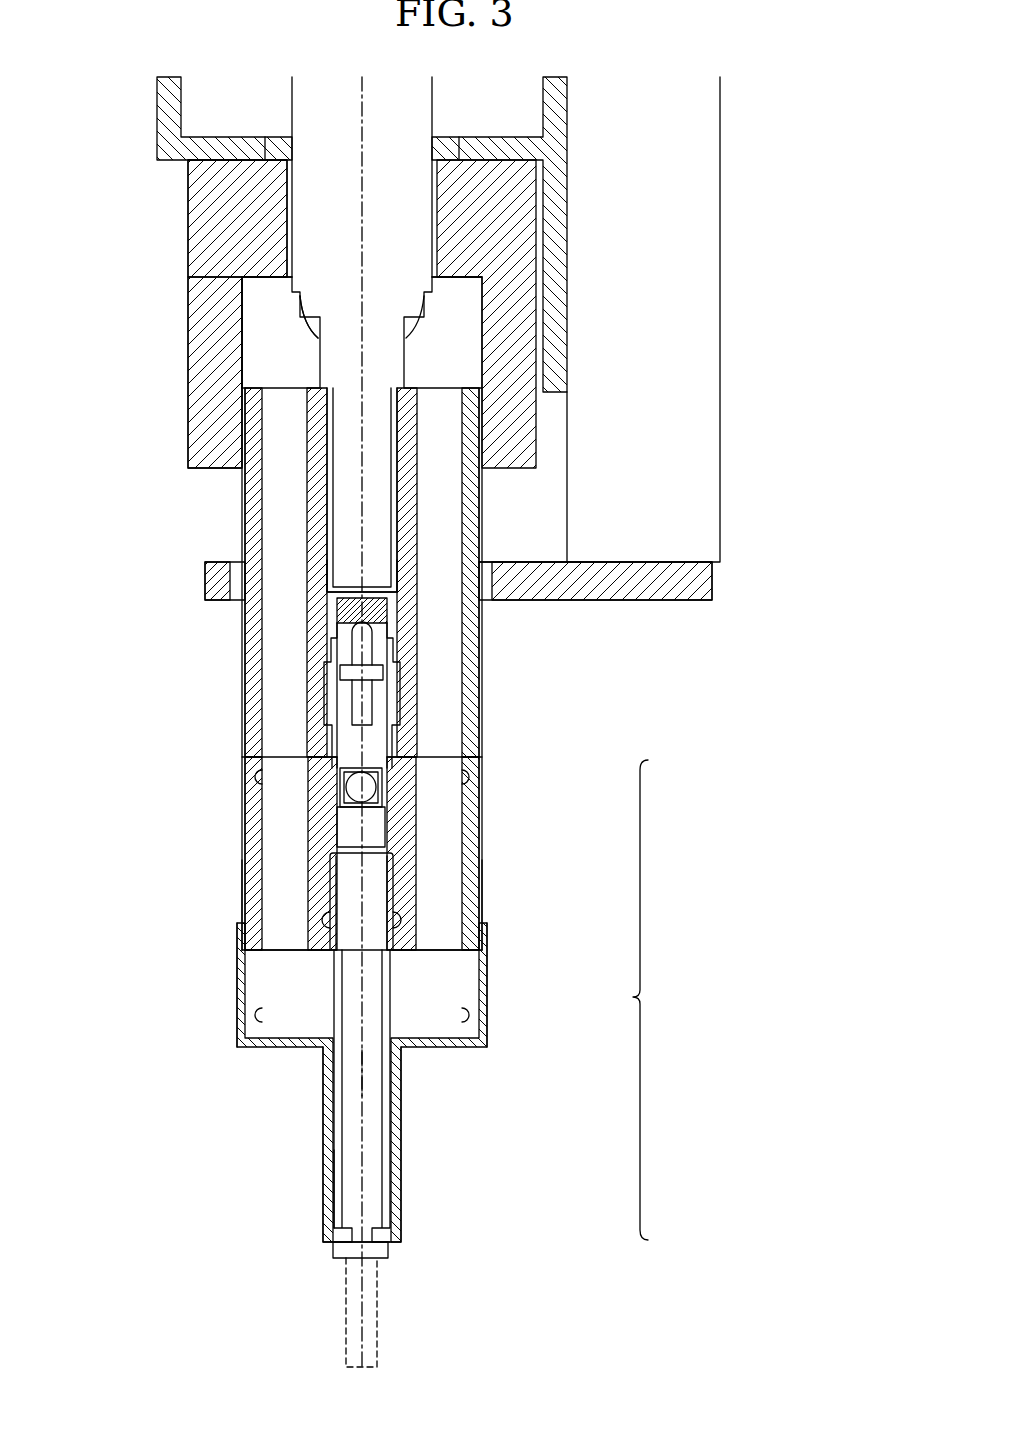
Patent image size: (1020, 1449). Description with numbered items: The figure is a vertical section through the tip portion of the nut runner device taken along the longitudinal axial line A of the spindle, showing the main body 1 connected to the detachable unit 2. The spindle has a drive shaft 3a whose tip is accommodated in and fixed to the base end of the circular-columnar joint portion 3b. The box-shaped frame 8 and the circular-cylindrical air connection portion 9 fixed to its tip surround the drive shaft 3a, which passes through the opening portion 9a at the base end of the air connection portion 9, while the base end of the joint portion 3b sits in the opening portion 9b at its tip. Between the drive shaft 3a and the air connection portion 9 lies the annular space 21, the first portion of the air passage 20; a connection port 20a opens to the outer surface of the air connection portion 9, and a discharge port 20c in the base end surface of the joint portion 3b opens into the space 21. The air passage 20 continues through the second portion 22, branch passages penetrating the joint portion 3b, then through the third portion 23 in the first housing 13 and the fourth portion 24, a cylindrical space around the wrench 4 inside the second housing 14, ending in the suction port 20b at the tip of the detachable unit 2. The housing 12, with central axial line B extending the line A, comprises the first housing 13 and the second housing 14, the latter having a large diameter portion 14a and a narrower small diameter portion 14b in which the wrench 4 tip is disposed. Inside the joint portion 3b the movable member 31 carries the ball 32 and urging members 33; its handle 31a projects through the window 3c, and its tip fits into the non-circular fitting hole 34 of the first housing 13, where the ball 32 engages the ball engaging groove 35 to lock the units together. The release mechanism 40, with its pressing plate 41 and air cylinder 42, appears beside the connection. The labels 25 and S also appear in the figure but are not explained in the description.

The main body 1 is at (783, 472).
The detachable unit 2 is at (658, 1000).
The drive shaft 3a is at (432, 107).
The joint portion 3b is at (245, 670).
The window 3c is at (393, 628).
The wrench 4 is at (337, 1130).
The frame 8 is at (157, 118).
The air connection portion 9 is at (188, 262).
The opening portion 9a is at (290, 221).
The opening portion 9b is at (262, 428).
The housing 12 is at (558, 860).
The first housing 13 is at (242, 905).
The second housing 14 is at (237, 985).
The large diameter portion 14a is at (482, 973).
The small diameter portion 14b is at (401, 1130).
The air passage 20 is at (284, 625).
The connection port 20a is at (298, 297).
The suction port 20b is at (329, 1177).
The discharge port 20c is at (295, 388).
The space 21 is at (236, 325).
The second portion 22 is at (262, 490).
The third portion 23 is at (263, 842).
The fourth portion 24 is at (260, 765).
The partition 25 is at (278, 734).
The movable member 31 is at (392, 680).
The handle 31a is at (387, 605).
The ball 32 is at (345, 790).
The urging members 33 is at (360, 702).
The fitting hole 34 is at (395, 835).
The ball engaging groove 35 is at (385, 800).
The release mechanism 40 is at (668, 614).
The pressing plate 41 is at (712, 578).
The air cylinder 42 is at (720, 288).
The longitudinal axial line A is at (362, 106).
The central axial line B is at (362, 1068).
The spray S is at (346, 1300).